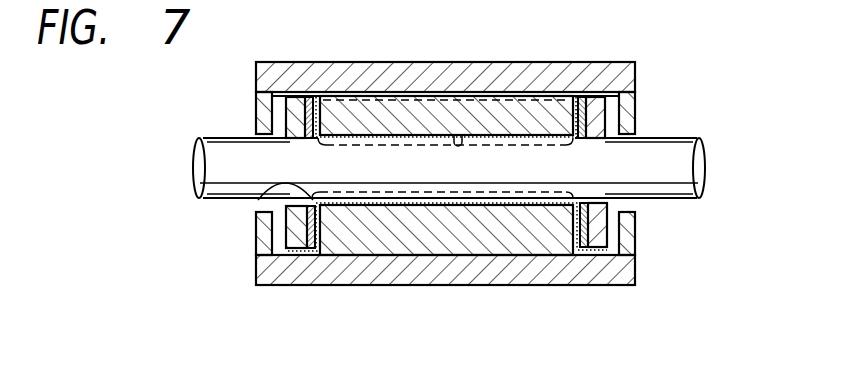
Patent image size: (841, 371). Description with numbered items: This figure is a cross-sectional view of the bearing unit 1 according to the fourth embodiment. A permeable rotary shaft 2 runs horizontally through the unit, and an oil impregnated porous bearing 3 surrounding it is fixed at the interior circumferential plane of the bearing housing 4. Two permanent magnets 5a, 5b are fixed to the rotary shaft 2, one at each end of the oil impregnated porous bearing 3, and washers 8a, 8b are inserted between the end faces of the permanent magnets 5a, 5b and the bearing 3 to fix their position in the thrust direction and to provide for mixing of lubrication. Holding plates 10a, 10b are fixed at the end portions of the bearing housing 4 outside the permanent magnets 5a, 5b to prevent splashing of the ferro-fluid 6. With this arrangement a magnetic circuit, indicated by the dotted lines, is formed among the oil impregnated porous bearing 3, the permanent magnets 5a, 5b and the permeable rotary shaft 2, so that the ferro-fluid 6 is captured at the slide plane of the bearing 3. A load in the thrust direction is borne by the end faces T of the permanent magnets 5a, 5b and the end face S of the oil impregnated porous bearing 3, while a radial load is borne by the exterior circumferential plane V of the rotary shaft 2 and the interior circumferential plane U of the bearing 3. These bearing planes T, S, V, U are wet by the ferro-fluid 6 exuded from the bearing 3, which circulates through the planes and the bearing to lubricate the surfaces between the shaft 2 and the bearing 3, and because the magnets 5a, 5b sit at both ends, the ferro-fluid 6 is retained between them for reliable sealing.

The bearing unit 1 is at (395, 62).
The rotary shaft 2 is at (668, 194).
The oil impregnated porous bearing 3 is at (473, 110).
The bearing housing 4 is at (413, 277).
The permanent magnet 5a is at (295, 255).
The permanent magnet 5b is at (598, 255).
The ferro-fluid 6 is at (572, 212).
The washer 8a is at (313, 258).
The washer 8b is at (582, 252).
The holding plate 10a is at (256, 114).
The holding plate 10b is at (636, 106).
The end face of the oil impregnated porous bearing S is at (323, 115).
The end faces of the permanent magnets T is at (262, 199).
The interior circumferential plane of the oil impregnated porous bearing U is at (454, 134).
The exterior circumferential plane of the rotary shaft V is at (508, 140).